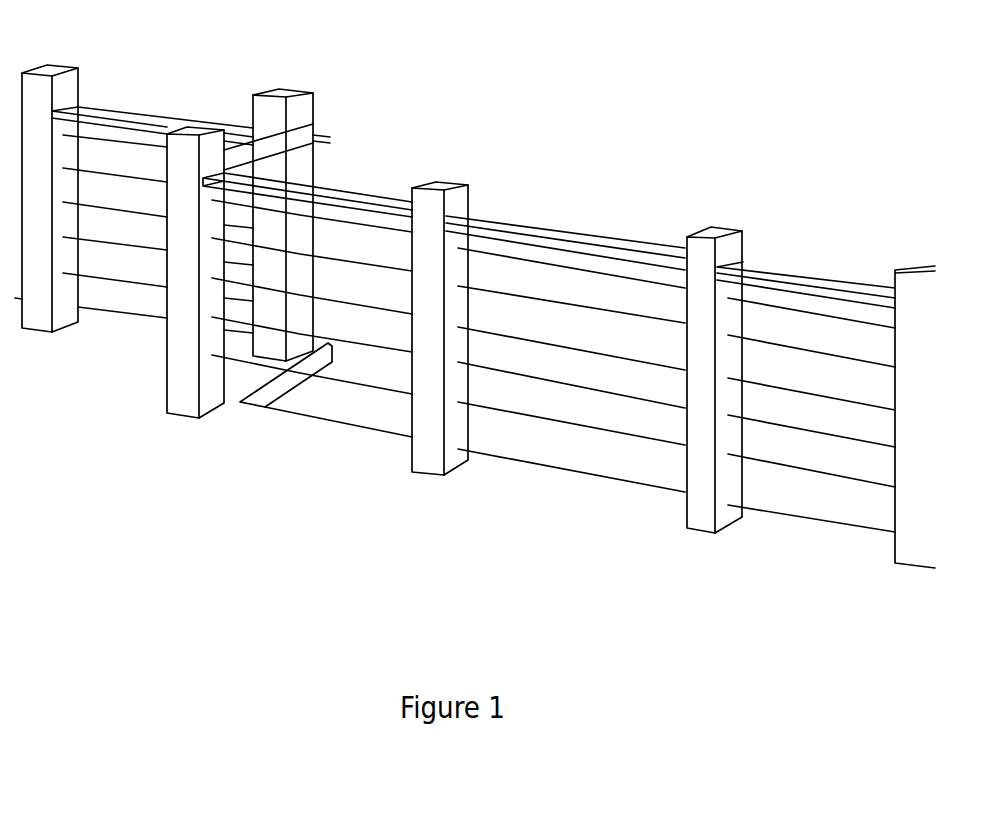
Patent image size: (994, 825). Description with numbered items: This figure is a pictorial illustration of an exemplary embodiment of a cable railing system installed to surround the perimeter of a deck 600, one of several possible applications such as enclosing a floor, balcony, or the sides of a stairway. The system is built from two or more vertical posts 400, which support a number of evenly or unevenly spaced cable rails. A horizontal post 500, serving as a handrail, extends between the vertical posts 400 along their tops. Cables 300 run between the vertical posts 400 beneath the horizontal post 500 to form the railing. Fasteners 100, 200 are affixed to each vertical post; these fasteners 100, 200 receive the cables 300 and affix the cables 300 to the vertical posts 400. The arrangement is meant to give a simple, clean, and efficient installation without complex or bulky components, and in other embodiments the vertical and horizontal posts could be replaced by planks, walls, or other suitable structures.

The fastener 100 is at (680, 360).
The fastener 200 is at (463, 316).
The cables 300 is at (795, 321).
The vertical posts 400 is at (467, 170).
The horizontal post 500 is at (337, 180).
The deck 600 is at (321, 499).